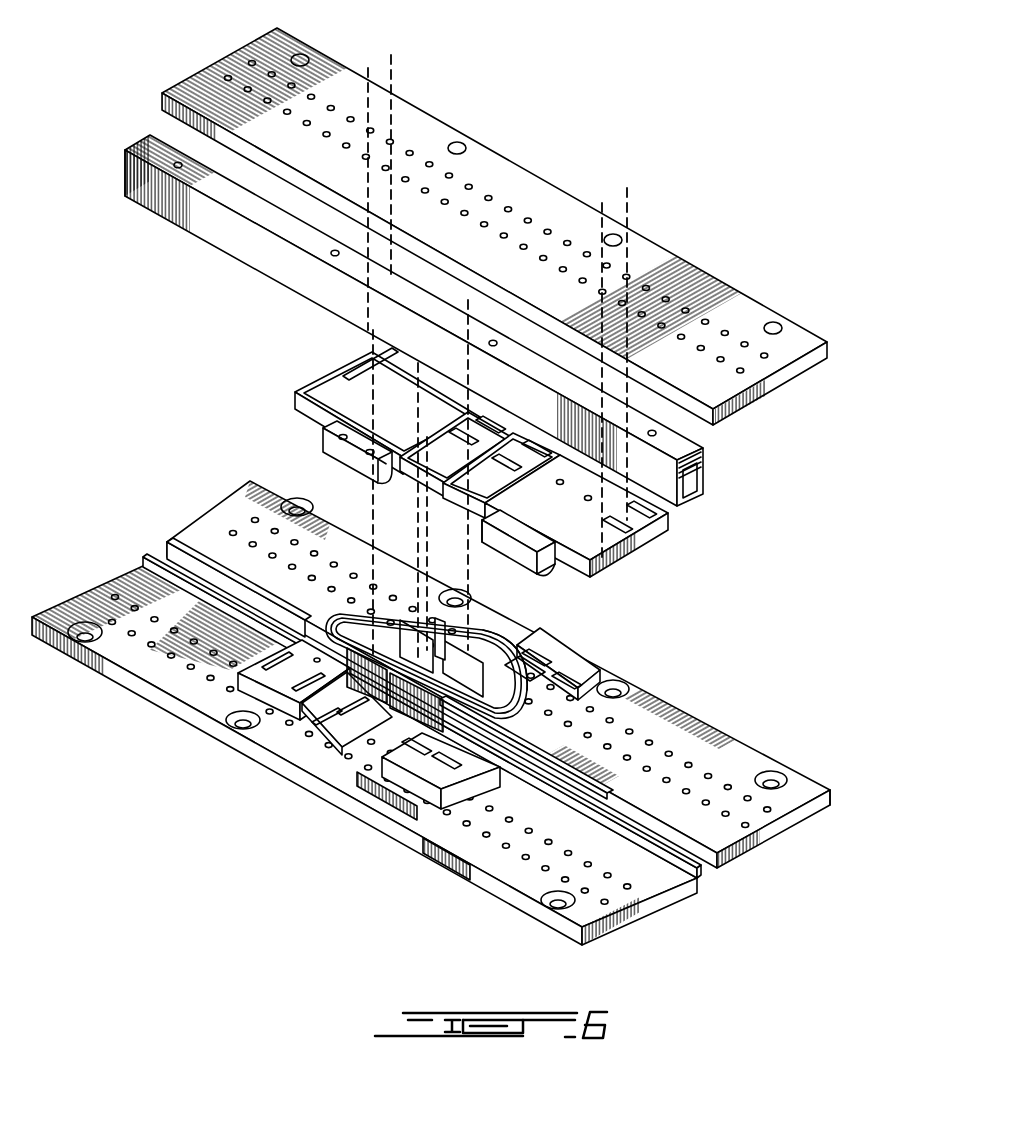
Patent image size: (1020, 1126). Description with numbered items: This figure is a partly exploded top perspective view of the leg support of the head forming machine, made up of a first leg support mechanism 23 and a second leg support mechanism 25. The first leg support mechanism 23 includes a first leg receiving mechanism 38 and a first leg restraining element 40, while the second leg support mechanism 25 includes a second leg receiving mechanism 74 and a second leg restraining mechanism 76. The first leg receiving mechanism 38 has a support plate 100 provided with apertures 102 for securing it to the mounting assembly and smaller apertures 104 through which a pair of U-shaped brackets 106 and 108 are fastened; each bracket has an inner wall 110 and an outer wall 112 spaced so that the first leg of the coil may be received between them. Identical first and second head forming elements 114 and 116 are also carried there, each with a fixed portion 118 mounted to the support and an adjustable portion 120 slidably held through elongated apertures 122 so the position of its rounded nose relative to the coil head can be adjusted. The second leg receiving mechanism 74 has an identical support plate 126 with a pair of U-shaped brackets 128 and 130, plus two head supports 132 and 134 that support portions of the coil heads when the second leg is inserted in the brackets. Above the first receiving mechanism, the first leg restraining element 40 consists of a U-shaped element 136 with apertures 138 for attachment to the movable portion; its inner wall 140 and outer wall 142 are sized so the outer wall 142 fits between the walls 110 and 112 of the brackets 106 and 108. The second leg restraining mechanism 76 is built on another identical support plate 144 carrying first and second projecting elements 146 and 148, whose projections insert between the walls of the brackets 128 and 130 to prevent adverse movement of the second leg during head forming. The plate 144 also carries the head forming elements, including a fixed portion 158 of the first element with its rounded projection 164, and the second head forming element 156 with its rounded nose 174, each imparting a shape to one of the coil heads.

The first leg support mechanism 23 is at (418, 563).
The second leg support mechanism 25 is at (494, 480).
The first leg receiving mechanism 38 is at (383, 747).
The first leg restraining element 40 is at (441, 330).
The second leg receiving mechanism 74 is at (492, 707).
The second leg restraining mechanism 76 is at (504, 242).
The support plate 100 is at (416, 772).
The apertures 102 is at (237, 713).
The smaller apertures 104 is at (113, 620).
The U-shaped bracket 106 is at (335, 725).
The U-shaped bracket 108 is at (372, 752).
The inner wall 110 is at (505, 762).
The outer wall 112 is at (472, 848).
The first head forming element 114 is at (297, 650).
The second head forming element 116 is at (578, 766).
The fixed portion 118 is at (433, 790).
The adjustable portion 120 is at (392, 800).
The elongated apertures 122 is at (396, 772).
The support plate 126 is at (810, 792).
The U-shaped bracket 128 is at (500, 628).
The U-shaped bracket 130 is at (543, 652).
The head support 132 is at (467, 637).
The head support 134 is at (573, 670).
The U-shaped element 136 is at (150, 172).
The apertures 138 is at (333, 255).
The inner wall 140 is at (697, 492).
The outer wall 142 is at (684, 503).
The support plate 144 is at (693, 282).
The first projecting element 146 is at (520, 447).
The second projecting element 148 is at (470, 413).
The second head forming element 156 is at (600, 568).
The fixed portion 158 is at (432, 393).
The rounded projection 164 is at (327, 466).
The rounded nose 174 is at (480, 520).